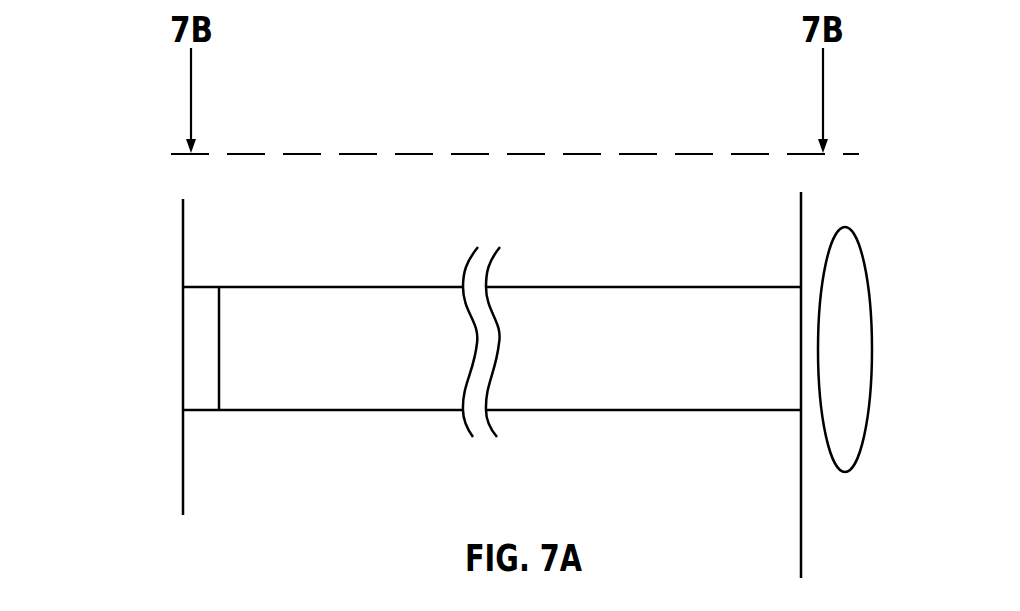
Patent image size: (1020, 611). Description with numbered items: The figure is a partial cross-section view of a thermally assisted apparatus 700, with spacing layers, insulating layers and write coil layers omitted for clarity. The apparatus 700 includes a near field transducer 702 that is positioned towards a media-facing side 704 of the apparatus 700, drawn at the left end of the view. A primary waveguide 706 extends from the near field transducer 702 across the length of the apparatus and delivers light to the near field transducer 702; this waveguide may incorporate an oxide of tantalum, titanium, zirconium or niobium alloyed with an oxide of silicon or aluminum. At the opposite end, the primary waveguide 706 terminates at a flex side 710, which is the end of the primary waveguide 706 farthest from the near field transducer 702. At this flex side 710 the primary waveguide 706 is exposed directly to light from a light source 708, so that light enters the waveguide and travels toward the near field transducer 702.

The thermally assisted apparatus 700 is at (145, 185).
The near field transducer 702 is at (199, 286).
The media-facing side 704 is at (182, 482).
The primary waveguide 706 is at (367, 286).
The light source 708 is at (864, 445).
The flex side 710 is at (836, 524).